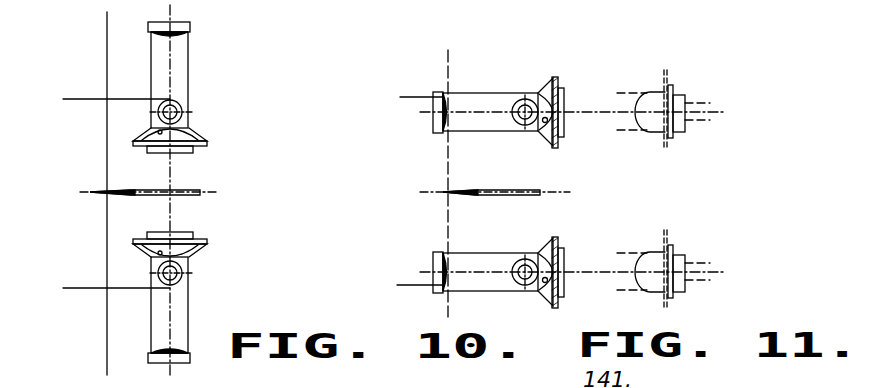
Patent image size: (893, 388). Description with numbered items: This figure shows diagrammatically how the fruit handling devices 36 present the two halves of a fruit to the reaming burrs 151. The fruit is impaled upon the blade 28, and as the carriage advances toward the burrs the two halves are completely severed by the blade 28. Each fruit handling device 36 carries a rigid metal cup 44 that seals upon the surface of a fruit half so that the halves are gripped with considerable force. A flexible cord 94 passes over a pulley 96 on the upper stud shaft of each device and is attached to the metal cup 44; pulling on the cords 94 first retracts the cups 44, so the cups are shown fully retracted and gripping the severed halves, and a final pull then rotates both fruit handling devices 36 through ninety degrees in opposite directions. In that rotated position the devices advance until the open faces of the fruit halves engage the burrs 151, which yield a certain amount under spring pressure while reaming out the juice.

In FIG. 10, the blade 28 is at (188, 190).
In FIG. 11, the blade 28 is at (493, 190).
In FIG. 10, the fruit handling device 36 is at (185, 56).
In FIG. 11, the fruit handling device 36 is at (485, 93).
In FIG. 10, the metal cup 44 is at (192, 139).
In FIG. 11, the metal cup 44 is at (550, 90).
In FIG. 10, the flexible cord 94 is at (73, 98).
In FIG. 11, the flexible cord 94 is at (410, 93).
In FIG. 10, the pulley 96 is at (158, 114).
In FIG. 11, the reaming burr 151 is at (647, 130).